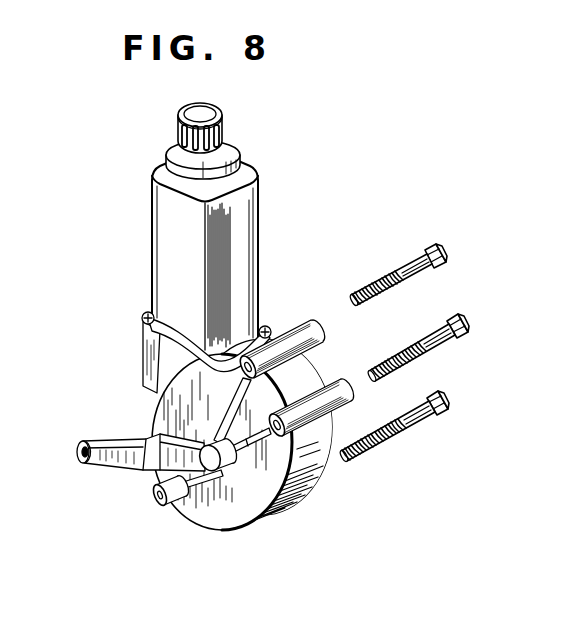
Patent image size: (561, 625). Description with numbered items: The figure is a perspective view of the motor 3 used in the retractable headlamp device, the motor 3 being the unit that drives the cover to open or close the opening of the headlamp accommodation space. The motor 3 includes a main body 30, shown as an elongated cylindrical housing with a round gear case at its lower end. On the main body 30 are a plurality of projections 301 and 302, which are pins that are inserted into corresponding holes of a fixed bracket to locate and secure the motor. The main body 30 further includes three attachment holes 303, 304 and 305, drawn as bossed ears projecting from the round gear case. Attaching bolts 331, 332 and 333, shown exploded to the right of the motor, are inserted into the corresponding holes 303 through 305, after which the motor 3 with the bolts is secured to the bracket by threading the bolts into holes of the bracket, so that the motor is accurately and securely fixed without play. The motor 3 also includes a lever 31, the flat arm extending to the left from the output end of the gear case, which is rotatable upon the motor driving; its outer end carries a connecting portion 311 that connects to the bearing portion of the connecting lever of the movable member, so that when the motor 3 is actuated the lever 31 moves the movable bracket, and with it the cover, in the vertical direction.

The motor 3 is at (288, 152).
The main body 30 is at (311, 505).
The projection 301 is at (198, 494).
The projection 302 is at (242, 466).
The attachment hole 303 is at (156, 508).
The attachment hole 304 is at (291, 436).
The attachment hole 305 is at (262, 360).
The lever 31 is at (108, 468).
The connecting portion 311 is at (93, 441).
The attaching bolt 331 is at (428, 418).
The attaching bolt 332 is at (451, 342).
The attaching bolt 333 is at (438, 266).